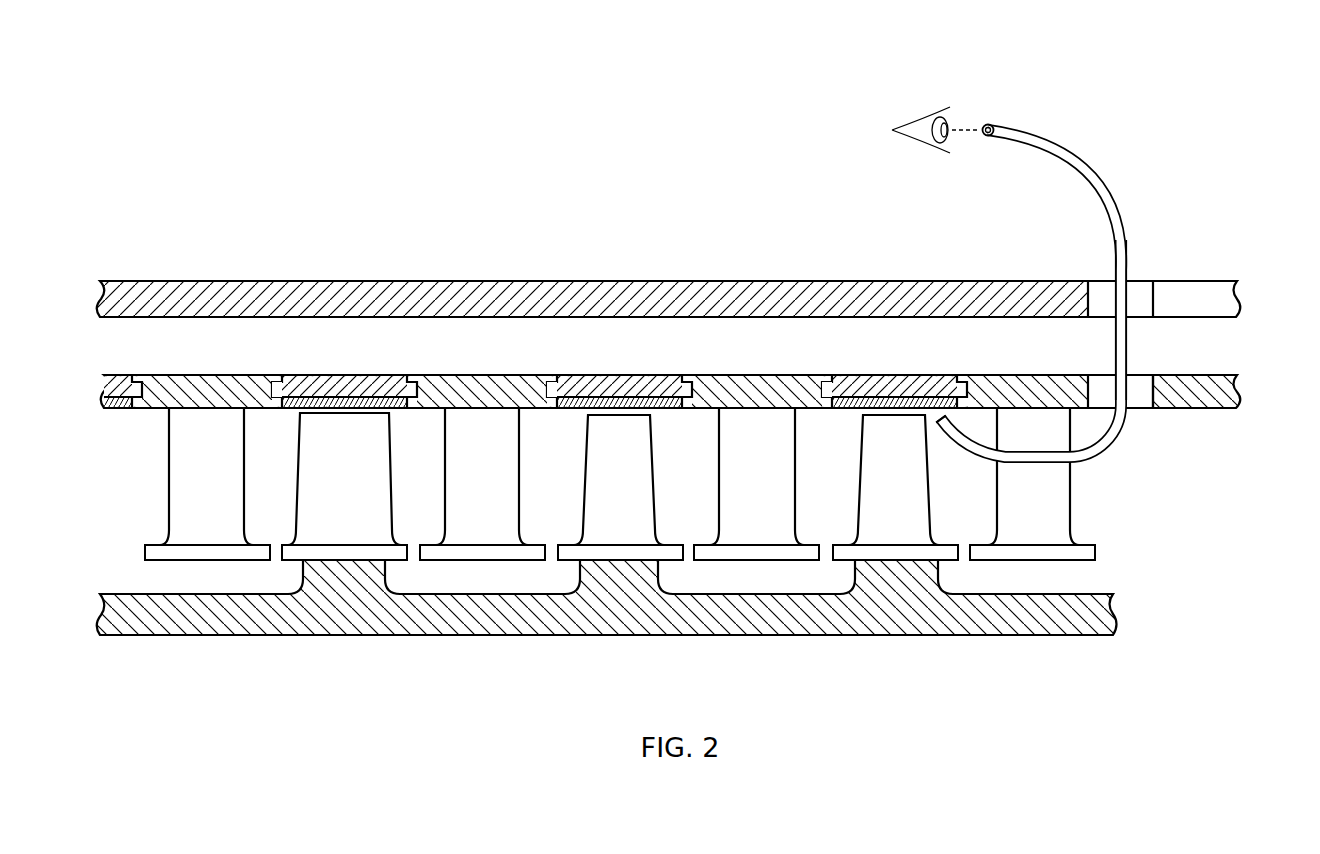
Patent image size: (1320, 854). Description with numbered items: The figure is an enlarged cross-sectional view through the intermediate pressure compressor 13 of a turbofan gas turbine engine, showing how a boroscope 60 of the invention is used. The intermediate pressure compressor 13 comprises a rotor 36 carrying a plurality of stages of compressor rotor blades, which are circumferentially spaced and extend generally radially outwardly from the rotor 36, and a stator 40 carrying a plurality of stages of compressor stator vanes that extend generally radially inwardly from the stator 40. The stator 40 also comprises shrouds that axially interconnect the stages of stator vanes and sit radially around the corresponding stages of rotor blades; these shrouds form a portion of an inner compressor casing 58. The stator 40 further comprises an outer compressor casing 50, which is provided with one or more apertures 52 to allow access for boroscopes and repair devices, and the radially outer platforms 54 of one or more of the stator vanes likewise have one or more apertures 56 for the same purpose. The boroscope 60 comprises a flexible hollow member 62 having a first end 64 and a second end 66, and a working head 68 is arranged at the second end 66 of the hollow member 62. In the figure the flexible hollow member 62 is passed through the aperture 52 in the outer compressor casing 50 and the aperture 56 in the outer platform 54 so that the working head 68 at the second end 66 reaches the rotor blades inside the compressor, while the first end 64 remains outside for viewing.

The intermediate pressure compressor 13 is at (685, 258).
The rotor 36 is at (620, 615).
The stator 40 is at (572, 267).
The outer compressor casing 50 is at (871, 281).
The apertures 52 is at (1100, 293).
The radially outer platforms 54 is at (1240, 393).
The apertures 56 is at (1142, 403).
The inner compressor casing 58 is at (1212, 370).
The boroscope 60 is at (1055, 142).
The flexible hollow member 62 is at (1128, 256).
The first end 64 is at (995, 125).
The second end 66 is at (958, 443).
The working head 68 is at (946, 422).